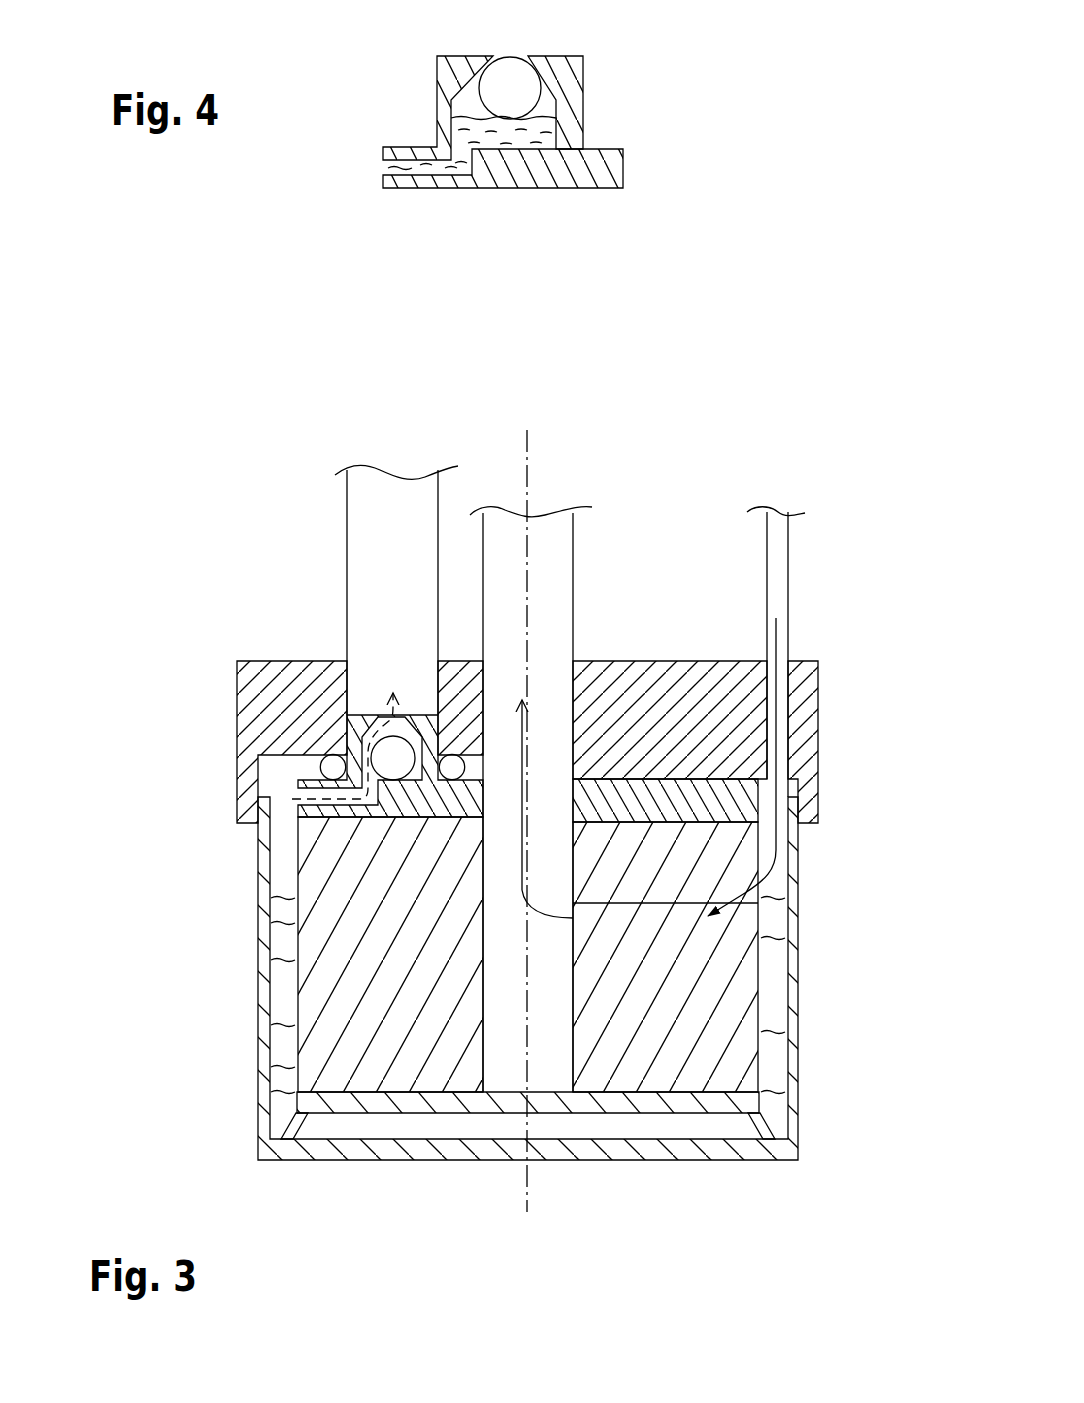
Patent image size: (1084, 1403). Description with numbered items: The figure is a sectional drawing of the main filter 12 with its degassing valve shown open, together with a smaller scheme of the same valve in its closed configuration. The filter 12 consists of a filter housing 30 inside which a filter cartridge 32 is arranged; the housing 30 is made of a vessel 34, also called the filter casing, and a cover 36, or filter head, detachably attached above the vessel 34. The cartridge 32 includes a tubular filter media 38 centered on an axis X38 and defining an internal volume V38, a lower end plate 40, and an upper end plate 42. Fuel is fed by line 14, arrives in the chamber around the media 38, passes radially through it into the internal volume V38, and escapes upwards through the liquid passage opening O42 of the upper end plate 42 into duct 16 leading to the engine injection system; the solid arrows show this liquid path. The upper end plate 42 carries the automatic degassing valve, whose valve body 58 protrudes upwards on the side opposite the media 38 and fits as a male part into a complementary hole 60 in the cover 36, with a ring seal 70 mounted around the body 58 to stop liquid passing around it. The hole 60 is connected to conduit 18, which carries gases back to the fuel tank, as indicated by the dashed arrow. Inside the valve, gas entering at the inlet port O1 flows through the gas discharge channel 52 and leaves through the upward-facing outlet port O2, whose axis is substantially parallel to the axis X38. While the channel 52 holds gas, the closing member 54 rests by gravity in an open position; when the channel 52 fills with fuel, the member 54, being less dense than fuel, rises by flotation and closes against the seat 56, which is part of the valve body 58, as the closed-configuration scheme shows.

In FIG. 3, the main filter 12 is at (503, 826).
In FIG. 3, the line 14 is at (771, 565).
In FIG. 3, the duct 16 is at (545, 598).
In FIG. 3, the conduit 18 is at (370, 586).
In FIG. 3, the filter housing 30 is at (420, 976).
In FIG. 3, the filter cartridge 32 is at (622, 878).
In FIG. 3, the vessel 34 is at (268, 1093).
In FIG. 3, the cover 36 is at (243, 793).
In FIG. 3, the filter media 38 is at (710, 980).
In FIG. 3, the lower end plate 40 is at (570, 1115).
In FIG. 4, the upper end plate 42 is at (600, 173).
In FIG. 3, the upper end plate 42 is at (765, 872).
In FIG. 4, the gas discharge channel 52 is at (413, 163).
In FIG. 3, the gas discharge channel 52 is at (372, 800).
In FIG. 4, the closing member 54 is at (523, 93).
In FIG. 3, the closing member 54 is at (390, 770).
In FIG. 4, the seat 56 is at (483, 90).
In FIG. 3, the valve body 58 is at (355, 727).
In FIG. 3, the hole 60 is at (354, 681).
In FIG. 3, the seal 70 is at (335, 767).
In FIG. 4, the inlet port O1 is at (381, 163).
In FIG. 4, the outlet port O2 is at (510, 54).
In FIG. 3, the liquid passage opening O42 is at (566, 801).
In FIG. 3, the internal volume V38 is at (529, 1055).
In FIG. 3, the axis X38 is at (556, 1198).